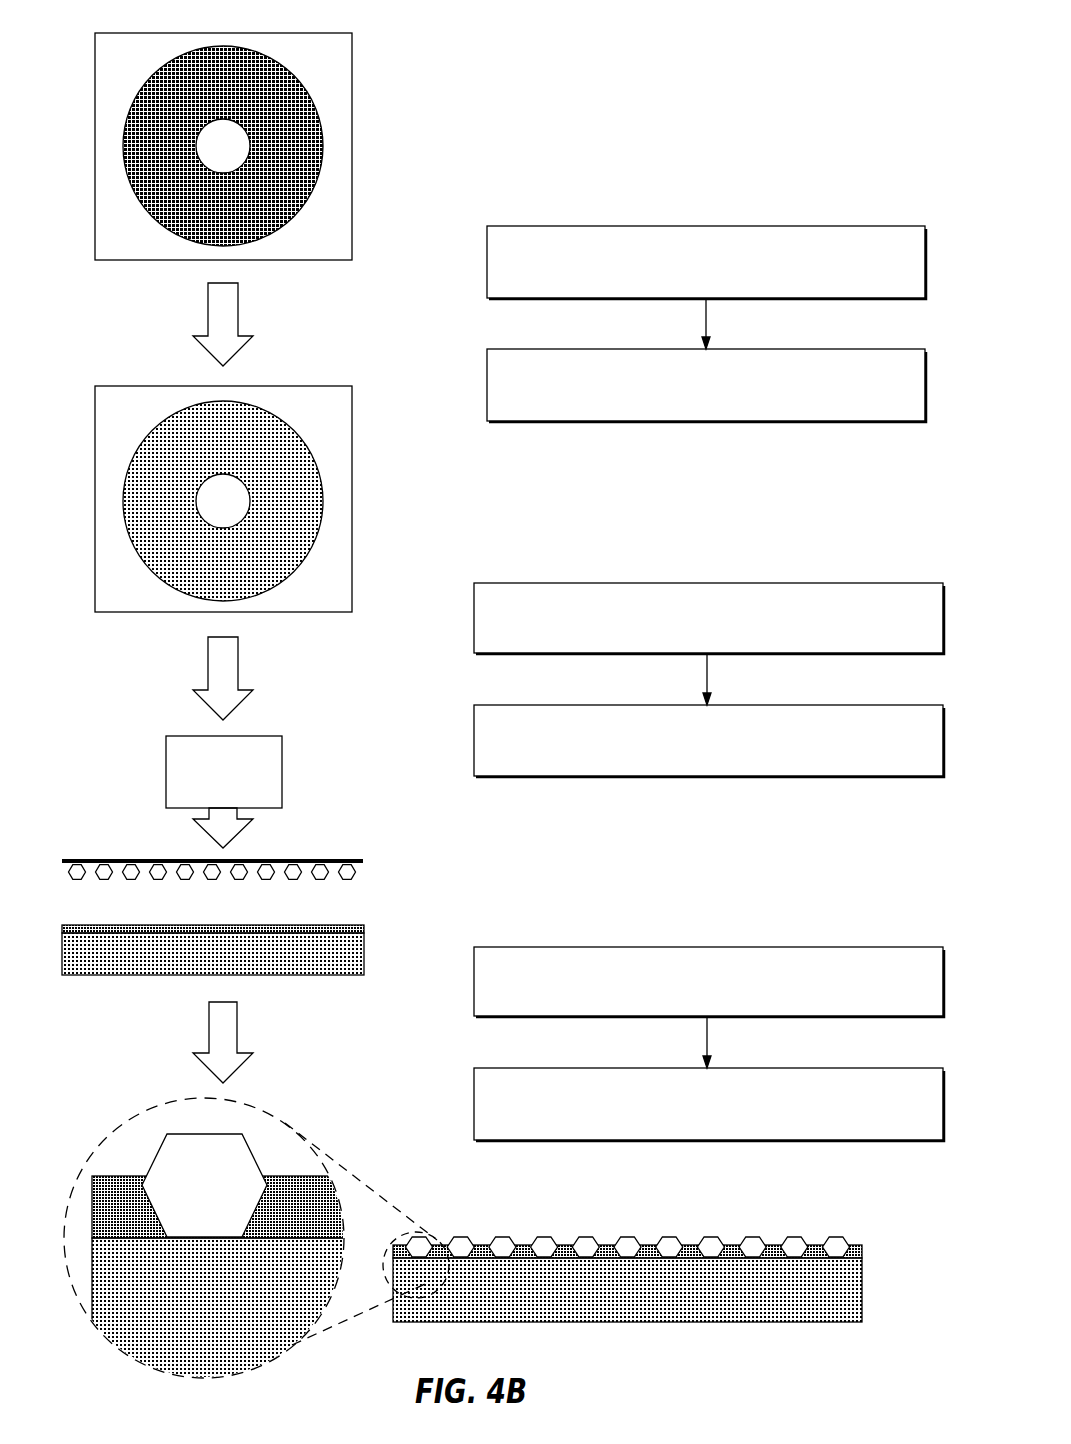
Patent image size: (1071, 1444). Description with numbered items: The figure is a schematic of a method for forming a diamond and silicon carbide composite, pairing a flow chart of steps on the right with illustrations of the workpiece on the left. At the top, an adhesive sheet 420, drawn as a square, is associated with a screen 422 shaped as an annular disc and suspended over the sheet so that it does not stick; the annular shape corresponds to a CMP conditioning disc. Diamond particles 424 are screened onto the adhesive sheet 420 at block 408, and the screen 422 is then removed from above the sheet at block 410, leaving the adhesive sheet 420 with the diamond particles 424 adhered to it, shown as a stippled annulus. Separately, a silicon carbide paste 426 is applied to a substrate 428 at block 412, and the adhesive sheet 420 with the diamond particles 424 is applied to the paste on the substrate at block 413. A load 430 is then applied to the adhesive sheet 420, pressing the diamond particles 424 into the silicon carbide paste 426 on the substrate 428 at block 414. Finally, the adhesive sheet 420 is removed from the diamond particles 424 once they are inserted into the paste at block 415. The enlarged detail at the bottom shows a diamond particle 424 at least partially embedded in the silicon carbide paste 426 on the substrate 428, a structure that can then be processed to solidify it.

The screening step 408 is at (706, 262).
The screen removing step 410 is at (706, 385).
The paste applying step 412 is at (709, 618).
The adhesive sheet applying step 413 is at (709, 741).
The pressing step 414 is at (709, 982).
The adhesive sheet removing step 415 is at (709, 1104).
The adhesive sheet 420 is at (348, 73).
The screen 422 is at (323, 143).
The diamond particles 424 is at (313, 498).
The silicon carbide paste 426 is at (364, 929).
The substrate 428 is at (364, 957).
The load 430 is at (282, 778).